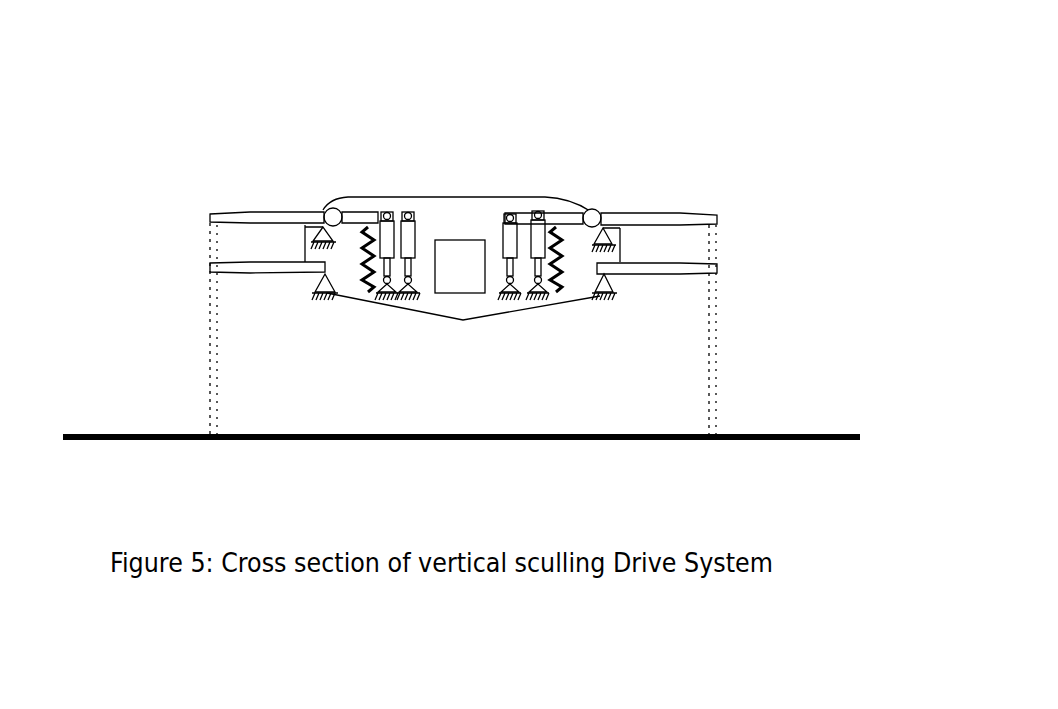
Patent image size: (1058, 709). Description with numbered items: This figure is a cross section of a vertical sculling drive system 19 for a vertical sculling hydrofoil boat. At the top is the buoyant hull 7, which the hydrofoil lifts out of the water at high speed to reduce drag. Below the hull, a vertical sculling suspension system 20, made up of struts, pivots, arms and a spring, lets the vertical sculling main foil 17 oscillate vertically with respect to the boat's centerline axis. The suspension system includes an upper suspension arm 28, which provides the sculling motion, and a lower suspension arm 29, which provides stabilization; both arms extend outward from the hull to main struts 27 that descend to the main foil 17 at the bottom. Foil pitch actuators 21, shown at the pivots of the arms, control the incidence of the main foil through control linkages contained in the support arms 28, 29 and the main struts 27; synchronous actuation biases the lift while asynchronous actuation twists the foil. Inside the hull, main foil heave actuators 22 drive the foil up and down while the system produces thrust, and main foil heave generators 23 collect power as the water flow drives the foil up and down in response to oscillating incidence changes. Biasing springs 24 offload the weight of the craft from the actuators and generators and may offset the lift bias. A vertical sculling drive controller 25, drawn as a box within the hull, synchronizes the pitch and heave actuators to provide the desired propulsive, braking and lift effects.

The buoyant hull 7 is at (365, 195).
The vertical sculling main foil 17 is at (385, 449).
The vertical sculling drive system 19 is at (445, 50).
The vertical sculling suspension system 20 is at (494, 212).
The foil pitch actuators 21 is at (320, 205).
The main foil heave actuators 22 is at (391, 206).
The main foil heave generators 23 is at (419, 206).
The biasing spring 24 is at (361, 282).
The vertical sculling drive controller 25 is at (482, 301).
The main strut 27 is at (209, 343).
The upper support arm 28 is at (668, 209).
The lower support arm 29 is at (691, 285).